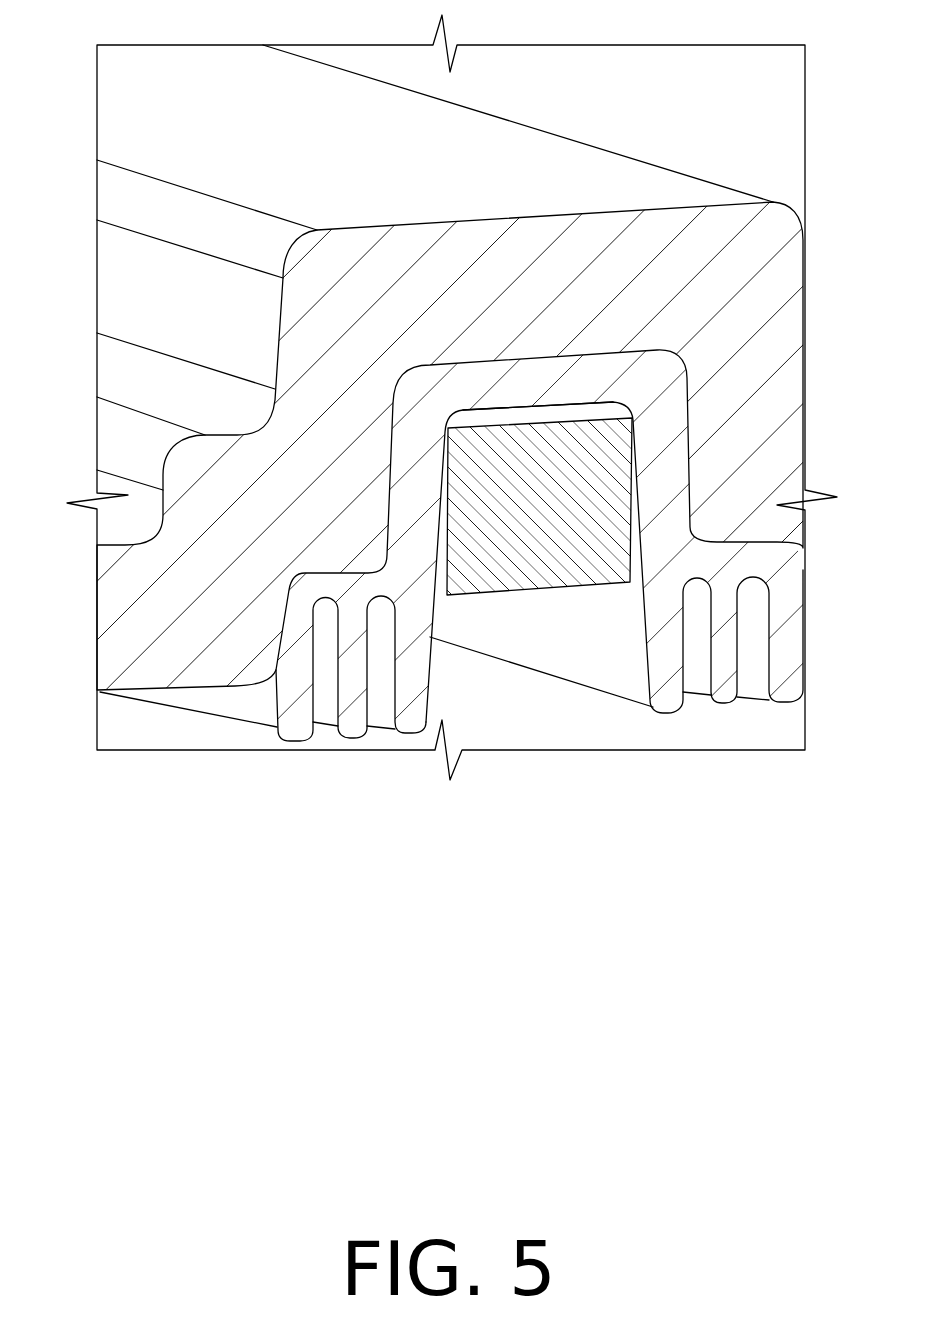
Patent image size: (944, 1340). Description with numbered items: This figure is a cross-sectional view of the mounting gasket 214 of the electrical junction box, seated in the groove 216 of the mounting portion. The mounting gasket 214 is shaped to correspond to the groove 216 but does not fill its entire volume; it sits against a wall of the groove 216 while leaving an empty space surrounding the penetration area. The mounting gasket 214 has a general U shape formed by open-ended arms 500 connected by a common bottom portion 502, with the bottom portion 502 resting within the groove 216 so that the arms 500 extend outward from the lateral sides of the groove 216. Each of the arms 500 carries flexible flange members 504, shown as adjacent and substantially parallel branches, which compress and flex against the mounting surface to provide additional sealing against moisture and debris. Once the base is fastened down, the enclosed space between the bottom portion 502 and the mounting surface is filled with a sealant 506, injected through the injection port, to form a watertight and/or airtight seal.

The mounting gasket 214 is at (585, 643).
The groove 216 is at (677, 358).
The open-ended arms 500 is at (417, 578).
The bottom portion 502 is at (493, 398).
The flexible flange members 504 is at (276, 727).
The sealant 506 is at (583, 530).